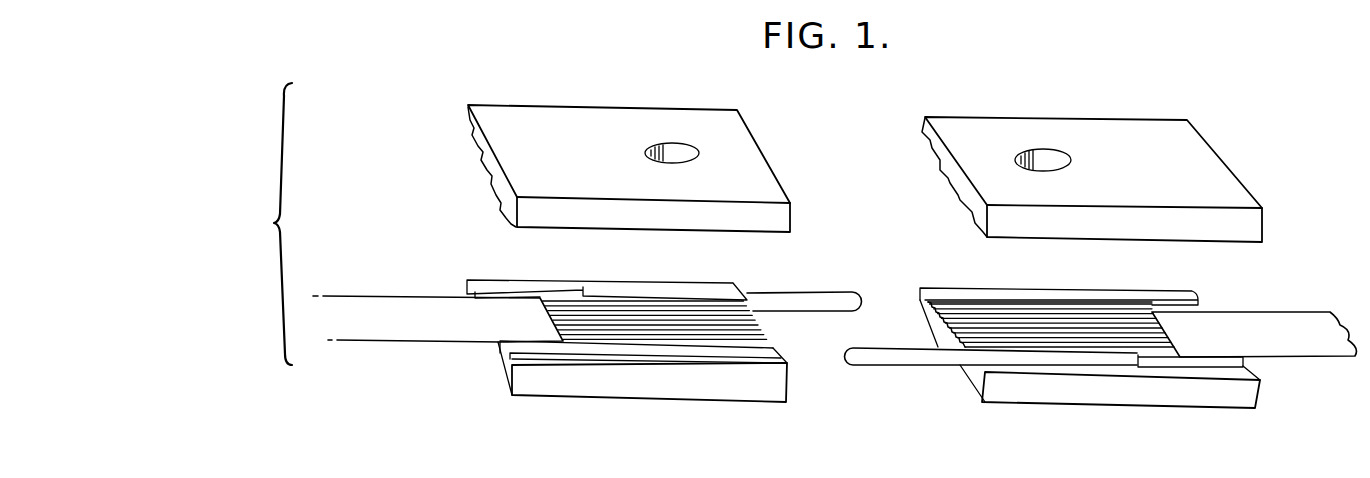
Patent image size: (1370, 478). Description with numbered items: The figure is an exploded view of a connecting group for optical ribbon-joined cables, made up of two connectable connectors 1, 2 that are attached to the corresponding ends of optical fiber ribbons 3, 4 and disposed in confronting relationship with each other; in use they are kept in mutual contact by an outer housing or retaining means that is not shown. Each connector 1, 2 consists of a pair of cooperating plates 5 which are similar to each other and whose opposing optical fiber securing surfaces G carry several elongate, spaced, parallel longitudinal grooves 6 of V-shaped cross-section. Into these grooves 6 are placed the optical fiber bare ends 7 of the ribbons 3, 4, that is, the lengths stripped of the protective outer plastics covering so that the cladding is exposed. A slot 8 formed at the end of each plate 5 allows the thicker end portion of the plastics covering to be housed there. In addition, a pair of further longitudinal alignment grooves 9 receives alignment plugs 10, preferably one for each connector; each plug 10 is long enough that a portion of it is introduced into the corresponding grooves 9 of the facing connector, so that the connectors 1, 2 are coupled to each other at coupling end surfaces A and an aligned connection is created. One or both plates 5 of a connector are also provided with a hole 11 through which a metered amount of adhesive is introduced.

The connector 1 is at (561, 100).
The connector 2 is at (1103, 116).
The optical fiber ribbon 3 is at (380, 302).
The optical fiber ribbon 4 is at (1292, 320).
The plate 5 is at (575, 115).
The longitudinal grooves 6 is at (953, 182).
The optical fiber bare ends 7 is at (760, 323).
The slot 8 is at (487, 177).
The longitudinal alignment grooves 9 is at (507, 295).
The alignment plug 10 is at (797, 293).
The hole 11 is at (667, 150).
The coupling end surface A is at (753, 136).
The optical fiber securing surface G is at (487, 283).